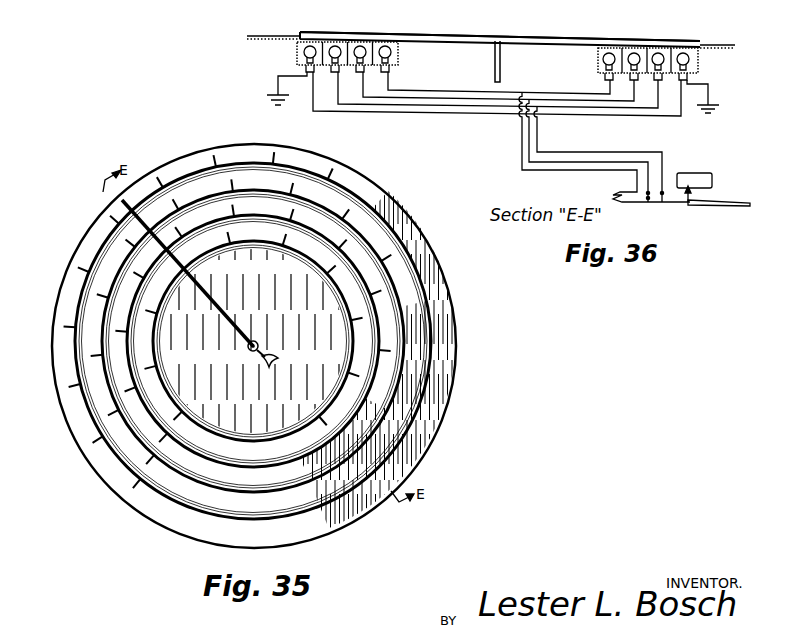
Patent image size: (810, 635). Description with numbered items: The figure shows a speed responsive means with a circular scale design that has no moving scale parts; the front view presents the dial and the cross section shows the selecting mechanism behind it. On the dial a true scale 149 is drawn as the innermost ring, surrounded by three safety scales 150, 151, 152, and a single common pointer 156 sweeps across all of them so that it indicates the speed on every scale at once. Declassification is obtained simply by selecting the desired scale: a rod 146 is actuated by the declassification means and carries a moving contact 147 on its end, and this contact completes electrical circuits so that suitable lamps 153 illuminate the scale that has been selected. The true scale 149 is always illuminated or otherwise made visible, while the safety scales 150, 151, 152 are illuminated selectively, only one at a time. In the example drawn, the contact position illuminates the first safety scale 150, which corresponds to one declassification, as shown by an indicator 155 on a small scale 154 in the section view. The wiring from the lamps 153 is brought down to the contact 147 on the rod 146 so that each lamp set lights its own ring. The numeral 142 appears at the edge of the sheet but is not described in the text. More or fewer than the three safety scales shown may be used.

In FIG. 36, the housing 142 is at (197, 3).
In FIG. 36, the rod 146 is at (708, 208).
In FIG. 36, the moving contact 147 is at (648, 199).
In FIG. 35, the true scale 149 is at (358, 393).
In FIG. 36, the true scale 149 is at (607, 48).
In FIG. 35, the No. 1 safety scale 150 is at (392, 337).
In FIG. 36, the No. 1 safety scale 150 is at (636, 47).
In FIG. 35, the safety scale 151 is at (397, 264).
In FIG. 36, the safety scale 151 is at (659, 47).
In FIG. 35, the safety scale 152 is at (346, 178).
In FIG. 36, the safety scale 152 is at (689, 48).
In FIG. 36, the lamps 153 is at (297, 54).
In FIG. 36, the scale 154 is at (712, 174).
In FIG. 36, the indicator 155 is at (697, 200).
In FIG. 35, the common pointer 156 is at (123, 207).
In FIG. 36, the common pointer 156 is at (412, 36).